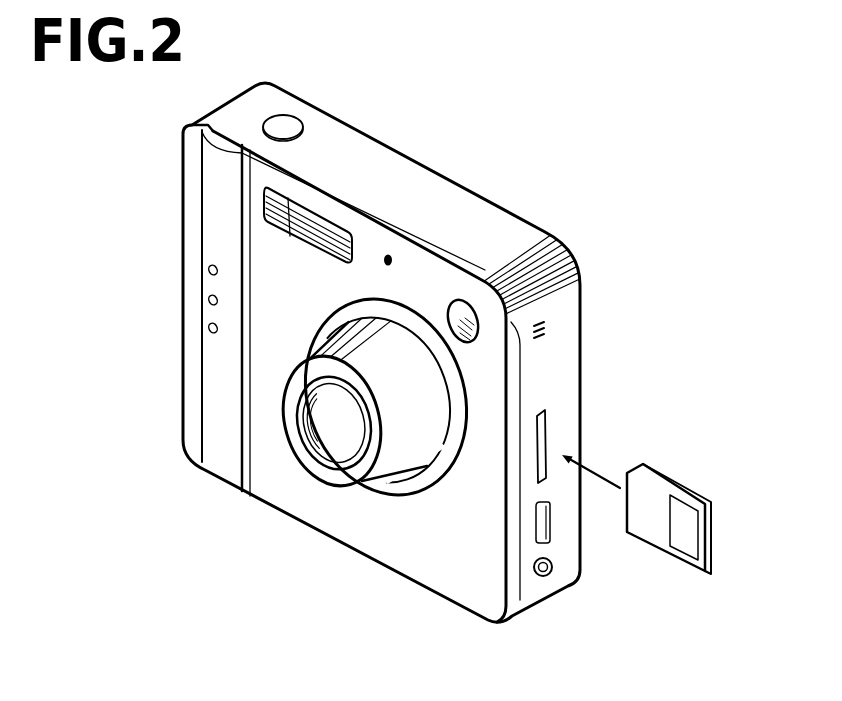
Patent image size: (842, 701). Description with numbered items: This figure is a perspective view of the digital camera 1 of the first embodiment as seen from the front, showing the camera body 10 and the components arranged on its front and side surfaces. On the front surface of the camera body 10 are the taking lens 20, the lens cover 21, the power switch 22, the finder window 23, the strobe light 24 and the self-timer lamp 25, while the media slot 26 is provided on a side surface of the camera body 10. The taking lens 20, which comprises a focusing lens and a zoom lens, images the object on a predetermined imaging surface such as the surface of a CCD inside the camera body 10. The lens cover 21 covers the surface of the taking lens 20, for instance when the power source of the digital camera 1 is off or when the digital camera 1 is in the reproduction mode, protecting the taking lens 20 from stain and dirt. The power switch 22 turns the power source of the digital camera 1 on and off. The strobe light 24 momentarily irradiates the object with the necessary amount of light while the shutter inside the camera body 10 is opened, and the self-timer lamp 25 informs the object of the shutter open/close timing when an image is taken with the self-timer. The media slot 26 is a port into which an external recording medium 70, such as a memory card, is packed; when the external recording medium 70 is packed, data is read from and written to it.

The digital camera 1 is at (389, 96).
The camera body 10 is at (413, 170).
The taking lens 20 is at (337, 425).
The lens cover 21 is at (358, 463).
The power switch 22 is at (215, 418).
The finder window 23 is at (480, 343).
The strobe light 24 is at (280, 212).
The self-timer lamp 25 is at (210, 296).
The media slot 26 is at (542, 428).
The external recording medium 70 is at (708, 541).